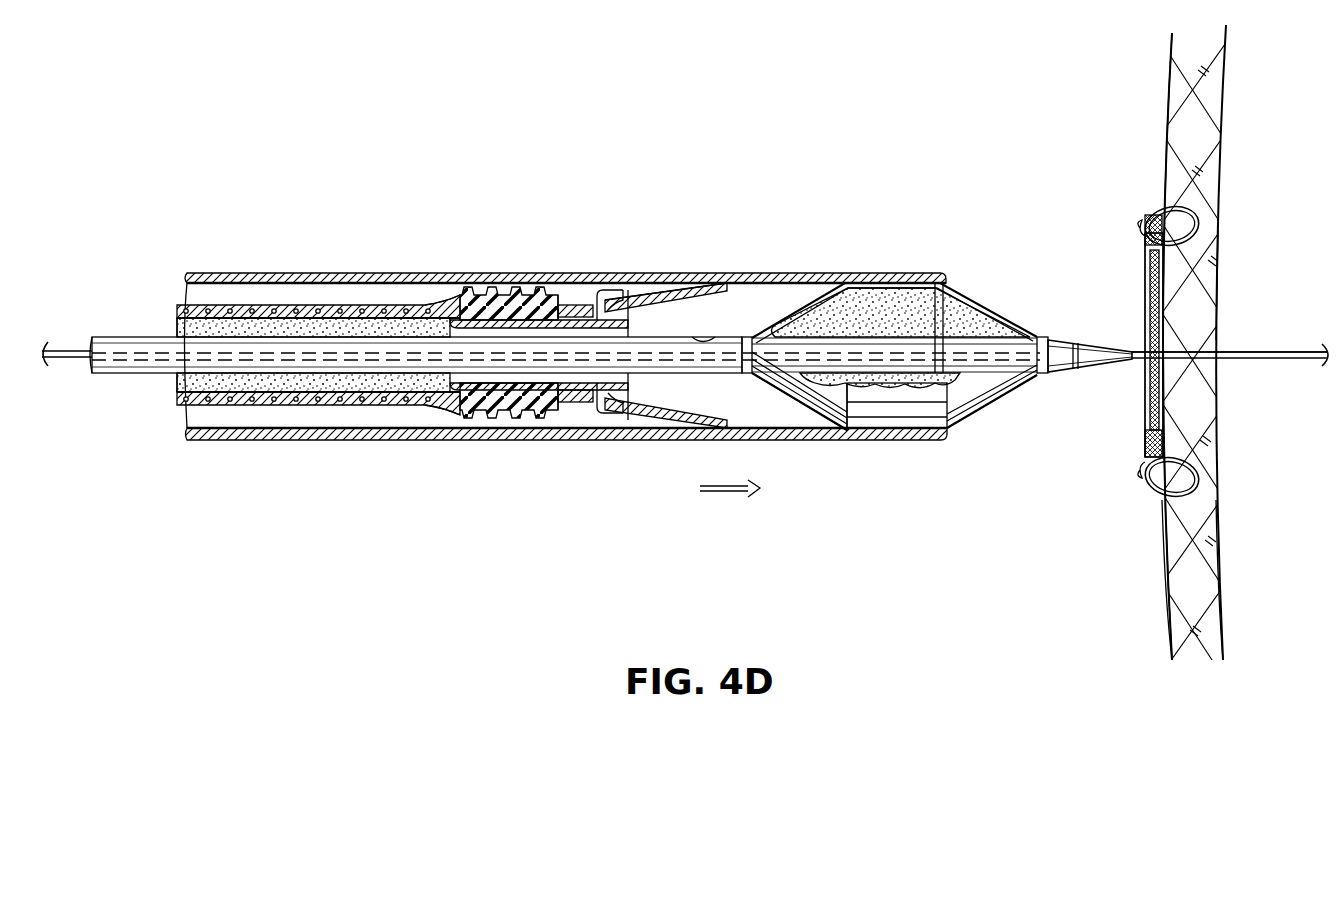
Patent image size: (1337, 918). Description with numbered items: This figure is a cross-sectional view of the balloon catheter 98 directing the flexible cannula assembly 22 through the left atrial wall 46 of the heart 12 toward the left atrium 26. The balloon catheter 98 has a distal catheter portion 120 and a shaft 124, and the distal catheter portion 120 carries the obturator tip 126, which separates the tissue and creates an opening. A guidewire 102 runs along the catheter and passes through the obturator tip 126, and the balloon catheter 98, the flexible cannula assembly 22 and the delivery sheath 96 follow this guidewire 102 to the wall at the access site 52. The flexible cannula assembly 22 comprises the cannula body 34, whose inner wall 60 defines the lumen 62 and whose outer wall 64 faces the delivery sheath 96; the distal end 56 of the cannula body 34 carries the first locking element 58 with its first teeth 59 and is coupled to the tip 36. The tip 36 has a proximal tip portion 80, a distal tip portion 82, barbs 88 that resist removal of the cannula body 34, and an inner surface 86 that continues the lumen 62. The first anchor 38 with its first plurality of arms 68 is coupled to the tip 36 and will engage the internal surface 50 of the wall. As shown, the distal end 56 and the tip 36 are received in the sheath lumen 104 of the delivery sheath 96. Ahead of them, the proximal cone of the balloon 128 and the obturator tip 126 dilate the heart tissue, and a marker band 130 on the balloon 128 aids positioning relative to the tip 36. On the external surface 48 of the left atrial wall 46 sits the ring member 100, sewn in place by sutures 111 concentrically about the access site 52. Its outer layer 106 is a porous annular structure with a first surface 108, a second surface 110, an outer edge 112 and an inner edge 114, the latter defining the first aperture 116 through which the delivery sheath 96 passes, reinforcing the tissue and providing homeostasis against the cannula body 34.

The heart 12 is at (1130, 115).
The flexible cannula assembly 22 is at (203, 296).
The left atrium 26 is at (1230, 406).
The cannula body 34 is at (253, 298).
The tip 36 is at (624, 318).
The first anchor 38 is at (692, 292).
The left atrial wall 46 is at (1175, 73).
The external surface 48 is at (1165, 582).
The internal surface 50 is at (1222, 582).
The access site 52 is at (1215, 330).
The distal end 56 is at (402, 300).
The first locking element 58 is at (470, 289).
The first teeth 59 is at (520, 296).
The inner wall 60 is at (176, 328).
The lumen 62 is at (230, 386).
The outer wall 64 is at (305, 304).
The first plurality of arms 68 is at (670, 298).
The proximal tip portion 80 is at (450, 412).
The distal tip portion 82 is at (610, 410).
The inner surface 86 is at (520, 404).
The barbs 88 is at (567, 400).
The delivery sheath 96 is at (776, 271).
The balloon catheter 98 is at (975, 293).
The ring member 100 is at (1133, 440).
The guidewire 102 is at (1300, 368).
The sheath lumen 104 is at (783, 418).
The outer layer 106 is at (1142, 246).
The first surface 108 is at (1210, 258).
The second surface 110 is at (1150, 260).
The sutures 111 is at (1198, 212).
The outer edge 112 is at (1150, 216).
The inner edge 114 is at (1150, 400).
The first aperture 116 is at (1150, 292).
The distal catheter portion 120 is at (1022, 338).
The shaft 124 is at (127, 375).
The obturator tip 126 is at (1088, 372).
The balloon 128 is at (890, 412).
The marker band 130 is at (938, 340).